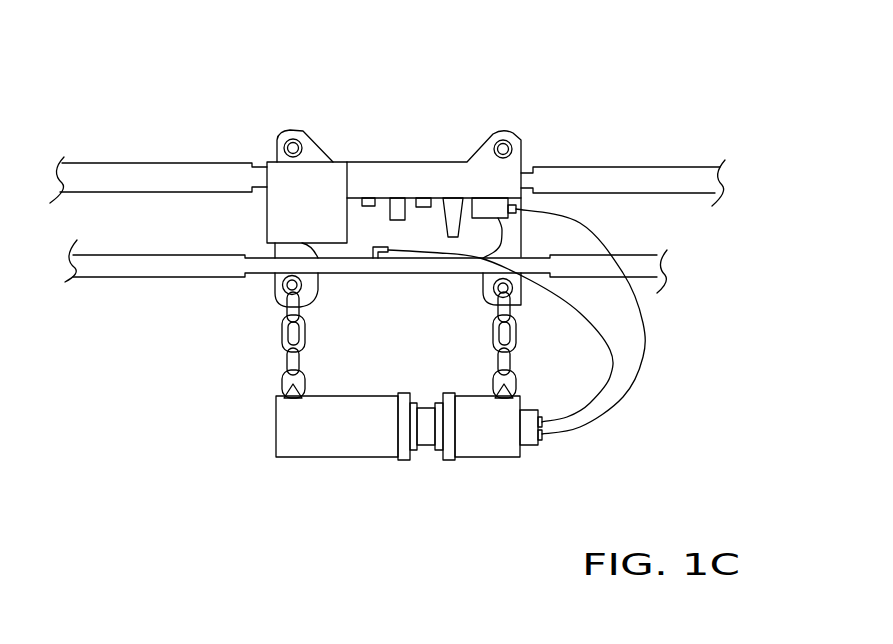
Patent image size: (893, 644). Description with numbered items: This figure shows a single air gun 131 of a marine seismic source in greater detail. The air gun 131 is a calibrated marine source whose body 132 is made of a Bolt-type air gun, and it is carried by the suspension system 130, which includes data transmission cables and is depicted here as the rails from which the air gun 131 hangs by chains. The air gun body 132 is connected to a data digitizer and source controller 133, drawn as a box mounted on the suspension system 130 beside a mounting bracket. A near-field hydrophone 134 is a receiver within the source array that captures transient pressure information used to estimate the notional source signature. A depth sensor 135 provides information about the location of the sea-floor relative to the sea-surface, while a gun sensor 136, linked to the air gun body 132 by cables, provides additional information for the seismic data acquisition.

The suspension system 130 is at (141, 164).
The air gun 131 is at (324, 510).
The body 132 is at (373, 460).
The data digitizer and source controller 133 is at (333, 223).
The near-field hydrophone 134 is at (393, 198).
The depth sensor 135 is at (373, 206).
The gun sensor 136 is at (542, 444).